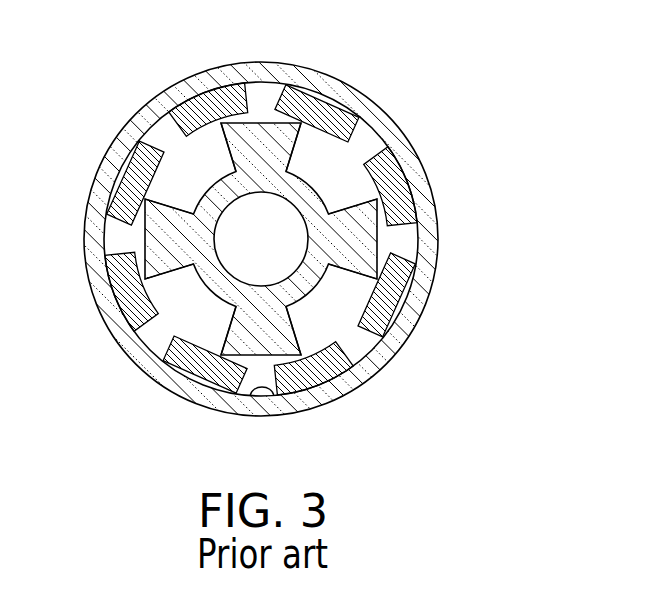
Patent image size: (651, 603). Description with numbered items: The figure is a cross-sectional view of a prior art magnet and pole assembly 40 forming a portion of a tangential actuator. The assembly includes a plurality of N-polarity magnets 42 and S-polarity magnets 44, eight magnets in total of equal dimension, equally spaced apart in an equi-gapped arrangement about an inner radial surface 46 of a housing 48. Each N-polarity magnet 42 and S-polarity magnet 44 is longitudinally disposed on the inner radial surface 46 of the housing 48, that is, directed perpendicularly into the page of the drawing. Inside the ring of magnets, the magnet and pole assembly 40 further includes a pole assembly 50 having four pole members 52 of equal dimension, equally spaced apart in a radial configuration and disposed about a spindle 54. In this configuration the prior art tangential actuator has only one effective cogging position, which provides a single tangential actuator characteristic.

The magnet and pole assembly 40 is at (514, 105).
The N-polarity magnet 42 is at (317, 93).
The S-polarity magnet 44 is at (197, 97).
The inner radial surface 46 is at (257, 390).
The housing 48 is at (433, 236).
The pole assembly 50 is at (325, 203).
The pole member 52 is at (175, 207).
The spindle 54 is at (283, 262).